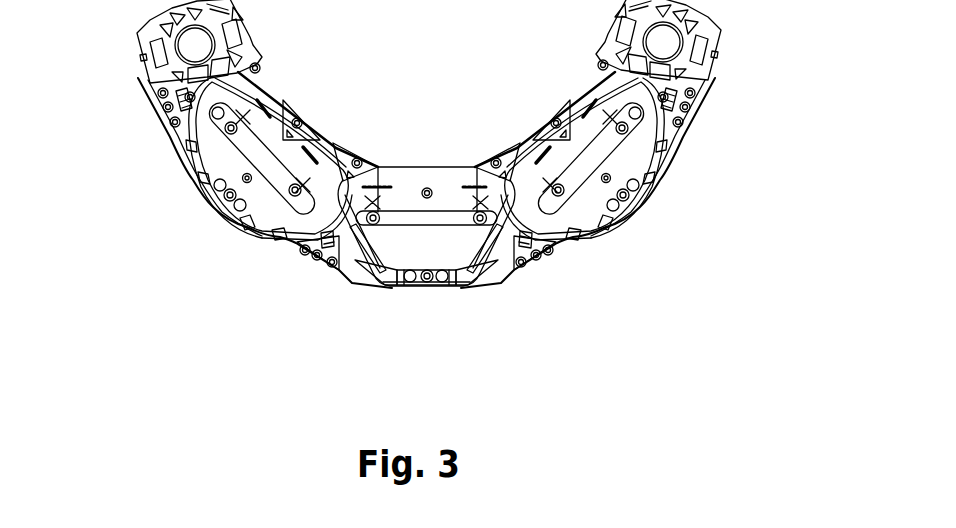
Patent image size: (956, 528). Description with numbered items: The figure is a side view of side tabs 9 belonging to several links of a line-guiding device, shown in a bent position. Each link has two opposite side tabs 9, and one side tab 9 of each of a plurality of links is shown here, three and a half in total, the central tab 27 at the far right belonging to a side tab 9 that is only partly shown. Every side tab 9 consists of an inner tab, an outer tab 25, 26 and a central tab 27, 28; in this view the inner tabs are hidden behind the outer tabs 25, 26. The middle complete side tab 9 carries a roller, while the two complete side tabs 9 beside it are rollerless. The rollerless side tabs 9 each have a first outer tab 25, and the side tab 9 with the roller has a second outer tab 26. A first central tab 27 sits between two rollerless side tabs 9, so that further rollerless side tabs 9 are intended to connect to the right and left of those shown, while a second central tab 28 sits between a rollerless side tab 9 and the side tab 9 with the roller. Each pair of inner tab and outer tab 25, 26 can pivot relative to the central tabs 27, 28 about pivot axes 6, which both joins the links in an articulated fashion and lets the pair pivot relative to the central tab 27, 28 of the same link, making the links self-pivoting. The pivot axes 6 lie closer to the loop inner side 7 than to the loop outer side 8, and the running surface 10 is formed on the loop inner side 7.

The pivot axis 6 is at (473, 167).
The loop inner side 7 is at (323, 117).
The loop outer side 8 is at (126, 43).
The side tab 9 is at (42, 124).
The running surface 10 is at (426, 115).
The first outer tab 25 is at (230, 198).
The second outer tab 26 is at (426, 287).
The first central tab 27 is at (145, 84).
The second central tab 28 is at (288, 252).